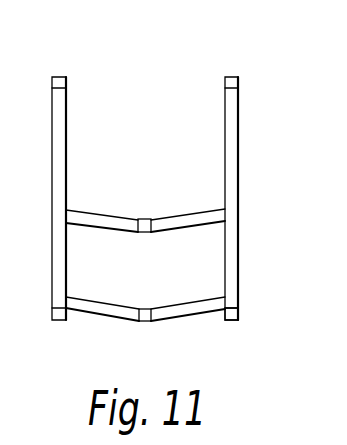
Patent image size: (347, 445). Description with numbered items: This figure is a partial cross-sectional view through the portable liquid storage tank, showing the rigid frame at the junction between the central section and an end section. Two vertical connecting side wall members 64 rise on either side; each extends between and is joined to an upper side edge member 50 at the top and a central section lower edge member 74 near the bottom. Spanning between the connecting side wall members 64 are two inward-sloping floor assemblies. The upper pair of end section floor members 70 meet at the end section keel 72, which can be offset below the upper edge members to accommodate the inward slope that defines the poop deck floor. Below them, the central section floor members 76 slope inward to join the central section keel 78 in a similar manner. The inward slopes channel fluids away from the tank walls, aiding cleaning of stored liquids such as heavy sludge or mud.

The upper side edge member 50 is at (61, 85).
The connecting side wall member 64 is at (232, 140).
The end section floor member 70 is at (84, 220).
The end section keel 72 is at (143, 222).
The central section lower edge member 74 is at (240, 317).
The central section floor member 76 is at (88, 306).
The central section keel 78 is at (141, 321).